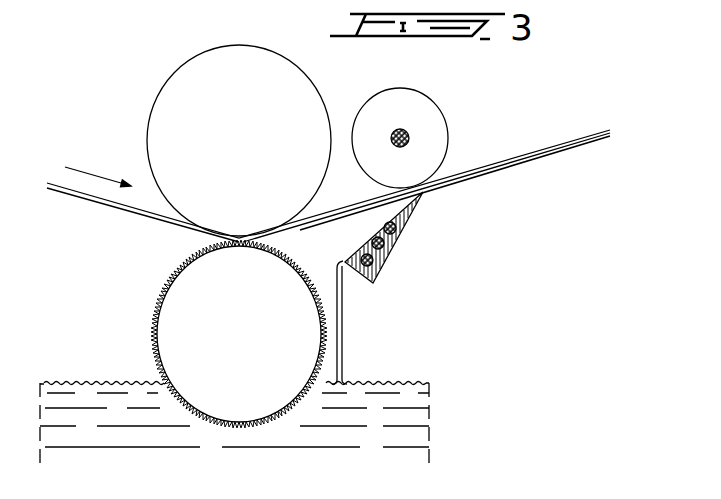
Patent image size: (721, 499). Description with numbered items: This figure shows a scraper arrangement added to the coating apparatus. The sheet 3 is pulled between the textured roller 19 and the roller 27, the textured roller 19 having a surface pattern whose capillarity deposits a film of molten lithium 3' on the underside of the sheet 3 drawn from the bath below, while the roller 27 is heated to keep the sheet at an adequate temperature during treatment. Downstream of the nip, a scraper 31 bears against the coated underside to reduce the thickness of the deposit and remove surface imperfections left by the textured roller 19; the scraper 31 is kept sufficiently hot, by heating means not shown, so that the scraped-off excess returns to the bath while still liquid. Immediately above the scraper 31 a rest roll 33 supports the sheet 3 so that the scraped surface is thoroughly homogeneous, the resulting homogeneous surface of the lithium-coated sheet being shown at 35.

The sheet 3 is at (328, 159).
The film of molten lithium 3' is at (426, 187).
The textured roller 19 is at (158, 302).
The roller 27 is at (177, 112).
The scraper 31 is at (403, 232).
The rest roll 33 is at (428, 118).
The homogeneous surface 35 is at (588, 144).